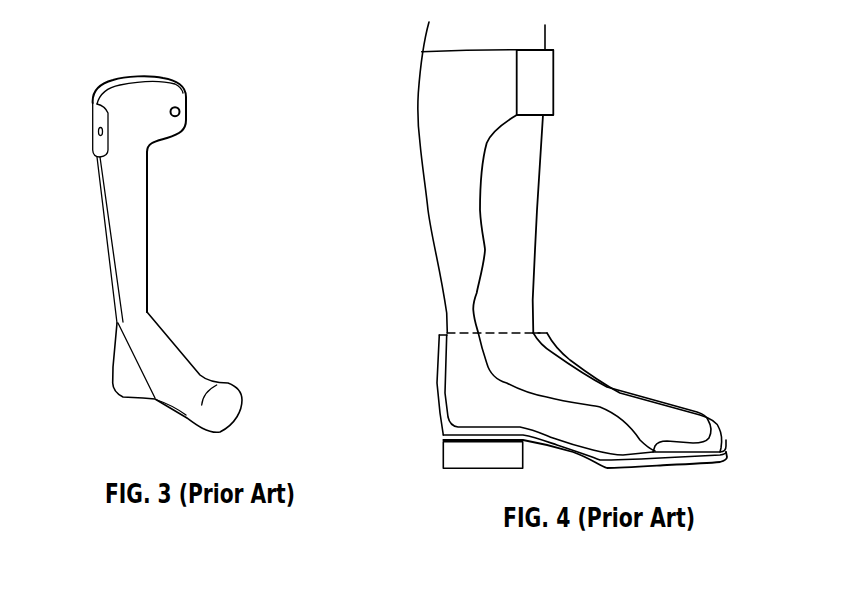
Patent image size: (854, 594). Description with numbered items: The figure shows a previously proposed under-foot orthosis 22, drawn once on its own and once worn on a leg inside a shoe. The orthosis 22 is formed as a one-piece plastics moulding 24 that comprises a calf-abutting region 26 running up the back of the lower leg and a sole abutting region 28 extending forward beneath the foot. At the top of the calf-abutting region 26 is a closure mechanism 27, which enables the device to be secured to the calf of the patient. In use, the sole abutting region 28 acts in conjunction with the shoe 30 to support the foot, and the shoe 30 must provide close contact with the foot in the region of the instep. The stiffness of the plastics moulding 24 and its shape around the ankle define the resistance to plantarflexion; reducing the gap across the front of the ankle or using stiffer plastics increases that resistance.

In FIG. 3, the orthosis 22 is at (78, 182).
In FIG. 4, the orthosis 22 is at (566, 150).
In FIG. 3, the one-piece plastics moulding 24 is at (140, 253).
In FIG. 4, the one-piece plastics moulding 24 is at (477, 247).
In FIG. 3, the calf-abutting region 26 is at (118, 223).
In FIG. 4, the calf-abutting region 26 is at (443, 140).
In FIG. 4, the closure mechanism 27 is at (543, 80).
In FIG. 3, the sole abutting region 28 is at (218, 383).
In FIG. 4, the sole abutting region 28 is at (607, 428).
In FIG. 4, the shoe 30 is at (428, 443).